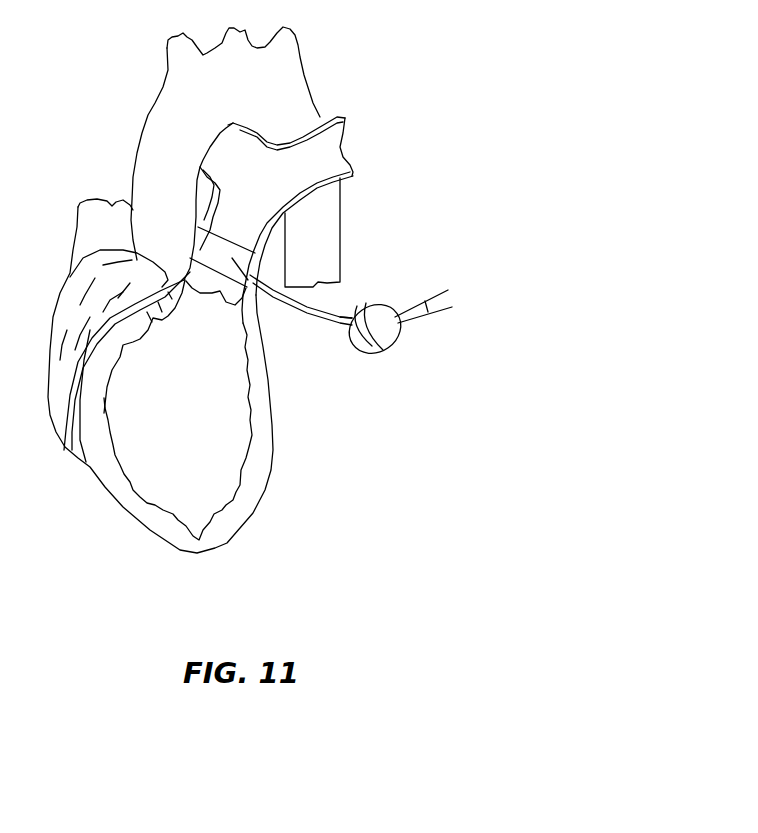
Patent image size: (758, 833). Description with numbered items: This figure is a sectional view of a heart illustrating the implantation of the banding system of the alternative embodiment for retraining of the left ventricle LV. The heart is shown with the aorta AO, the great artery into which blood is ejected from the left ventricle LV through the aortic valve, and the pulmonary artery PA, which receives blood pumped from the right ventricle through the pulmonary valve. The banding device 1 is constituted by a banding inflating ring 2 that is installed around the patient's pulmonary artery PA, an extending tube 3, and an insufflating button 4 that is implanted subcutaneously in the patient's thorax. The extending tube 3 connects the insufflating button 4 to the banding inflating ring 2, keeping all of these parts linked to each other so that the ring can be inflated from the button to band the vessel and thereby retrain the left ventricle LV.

The device 1 is at (321, 313).
The banding inflating ring 2 is at (253, 287).
The extending tube 3 is at (327, 320).
The insufflating button 4 is at (400, 330).
The aorta AO is at (243, 87).
The pulmonary artery PA is at (258, 182).
The left ventricle LV is at (207, 443).